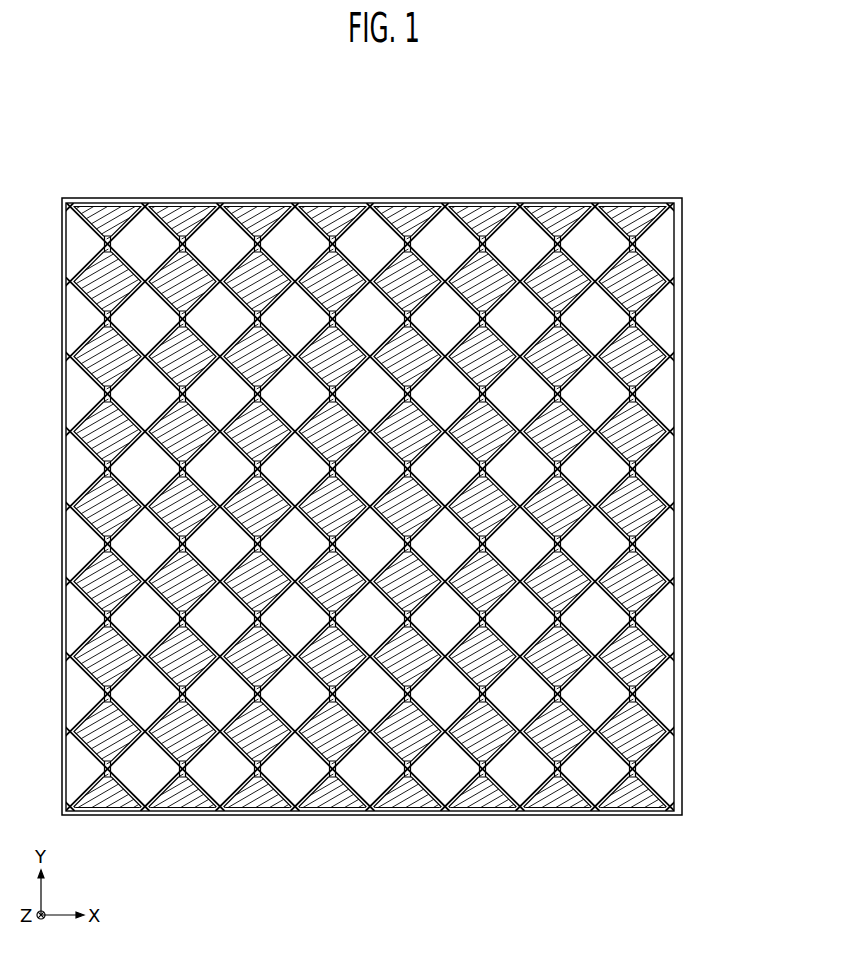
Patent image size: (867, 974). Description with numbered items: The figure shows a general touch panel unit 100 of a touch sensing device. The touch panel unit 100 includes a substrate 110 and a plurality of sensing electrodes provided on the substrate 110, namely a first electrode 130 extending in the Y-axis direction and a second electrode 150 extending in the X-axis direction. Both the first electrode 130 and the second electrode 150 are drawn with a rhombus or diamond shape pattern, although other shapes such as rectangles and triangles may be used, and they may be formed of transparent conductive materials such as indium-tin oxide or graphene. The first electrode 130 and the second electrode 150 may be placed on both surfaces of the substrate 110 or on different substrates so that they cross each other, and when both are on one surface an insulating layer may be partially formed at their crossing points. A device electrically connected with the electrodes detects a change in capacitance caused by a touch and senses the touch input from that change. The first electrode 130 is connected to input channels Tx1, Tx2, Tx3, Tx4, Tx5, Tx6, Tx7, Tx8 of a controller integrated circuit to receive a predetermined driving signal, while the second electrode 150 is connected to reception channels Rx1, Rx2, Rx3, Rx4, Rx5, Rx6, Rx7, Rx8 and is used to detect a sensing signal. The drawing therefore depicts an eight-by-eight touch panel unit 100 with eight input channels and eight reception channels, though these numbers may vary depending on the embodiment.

The touch panel unit 100 is at (604, 116).
The substrate 110 is at (683, 797).
The first electrode 130 is at (619, 806).
The second electrode 150 is at (666, 754).
The input channel Tx1 is at (108, 815).
The input channel Tx2 is at (182, 815).
The input channel Tx3 is at (258, 815).
The input channel Tx4 is at (332, 815).
The input channel Tx5 is at (408, 815).
The input channel Tx6 is at (482, 815).
The input channel Tx7 is at (558, 815).
The input channel Tx8 is at (632, 815).
The reception channel Rx1 is at (674, 244).
The reception channel Rx2 is at (674, 319).
The reception channel Rx3 is at (674, 394).
The reception channel Rx4 is at (674, 469).
The reception channel Rx5 is at (674, 544).
The reception channel Rx6 is at (674, 619).
The reception channel Rx7 is at (674, 694).
The reception channel Rx8 is at (674, 769).